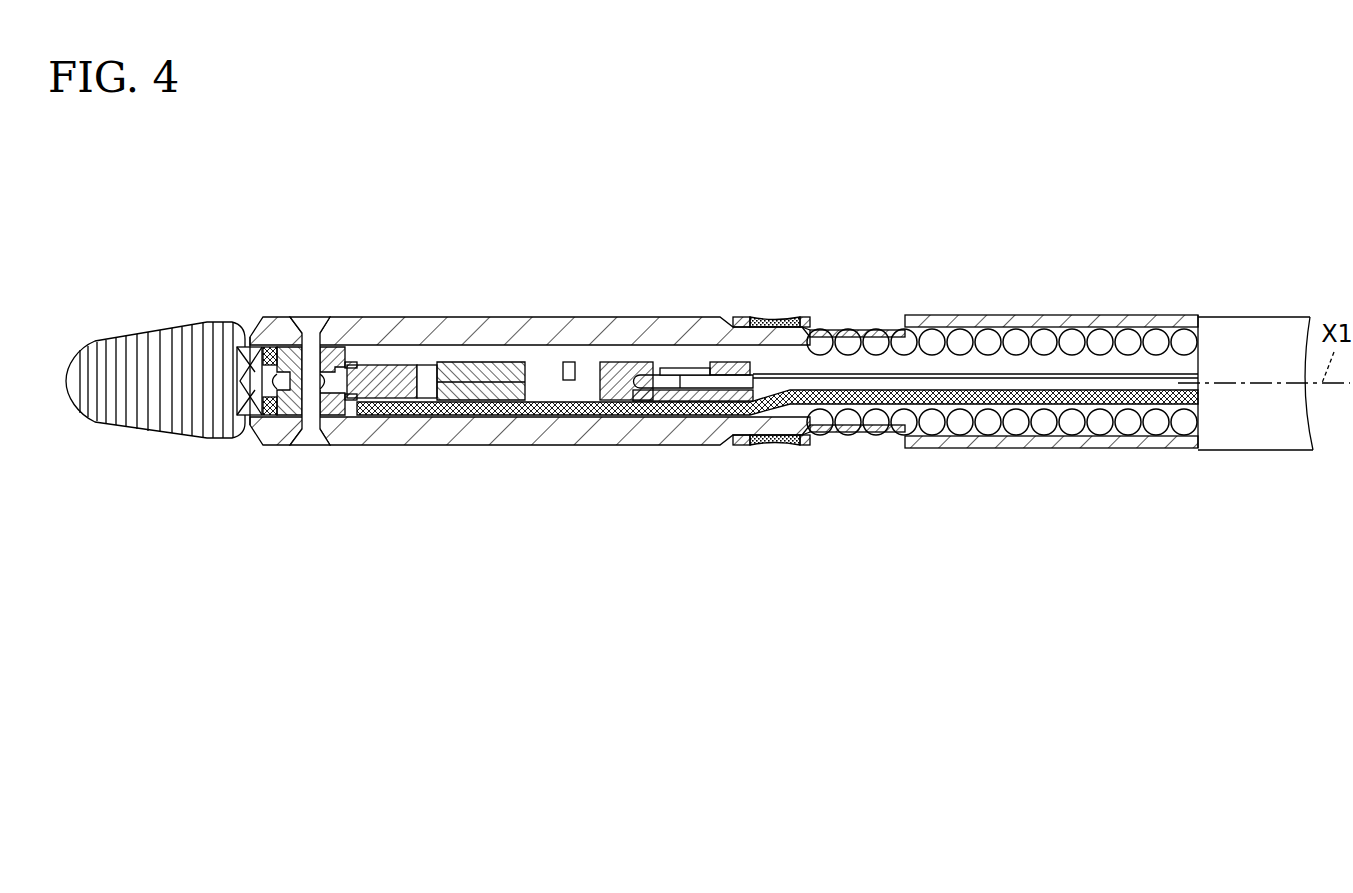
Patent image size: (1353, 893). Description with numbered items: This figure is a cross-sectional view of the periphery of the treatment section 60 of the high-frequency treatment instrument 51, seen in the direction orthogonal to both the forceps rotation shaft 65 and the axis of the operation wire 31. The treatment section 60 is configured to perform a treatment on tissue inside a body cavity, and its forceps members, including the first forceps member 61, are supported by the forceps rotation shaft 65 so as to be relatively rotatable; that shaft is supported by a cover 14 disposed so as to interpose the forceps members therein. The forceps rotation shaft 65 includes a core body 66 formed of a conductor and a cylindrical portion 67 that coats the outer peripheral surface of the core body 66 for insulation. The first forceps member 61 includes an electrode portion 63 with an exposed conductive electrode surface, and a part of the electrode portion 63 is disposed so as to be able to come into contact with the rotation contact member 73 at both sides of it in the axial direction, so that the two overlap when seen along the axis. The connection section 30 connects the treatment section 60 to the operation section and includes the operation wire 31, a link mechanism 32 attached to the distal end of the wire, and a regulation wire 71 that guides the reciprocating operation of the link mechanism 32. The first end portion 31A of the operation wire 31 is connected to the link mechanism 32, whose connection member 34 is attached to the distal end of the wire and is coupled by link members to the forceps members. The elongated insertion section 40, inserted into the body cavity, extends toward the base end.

The cover 14 is at (518, 440).
The connection section 30 is at (719, 293).
The operation wire 31 is at (1061, 373).
The first end portion 31A is at (693, 382).
The link mechanism 32 is at (650, 288).
The connection member 34 is at (637, 370).
The insertion section 40 is at (954, 460).
The high-frequency treatment instrument 51 is at (683, 182).
The treatment section 60 is at (235, 349).
The first forceps member 61 is at (190, 330).
The electrode portion 63 is at (270, 348).
The forceps rotation shaft 65 is at (323, 455).
The core body 66 is at (310, 432).
The cylindrical portion 67 is at (332, 348).
The regulation wire 71 is at (618, 412).
The rotation contact member 73 is at (280, 420).